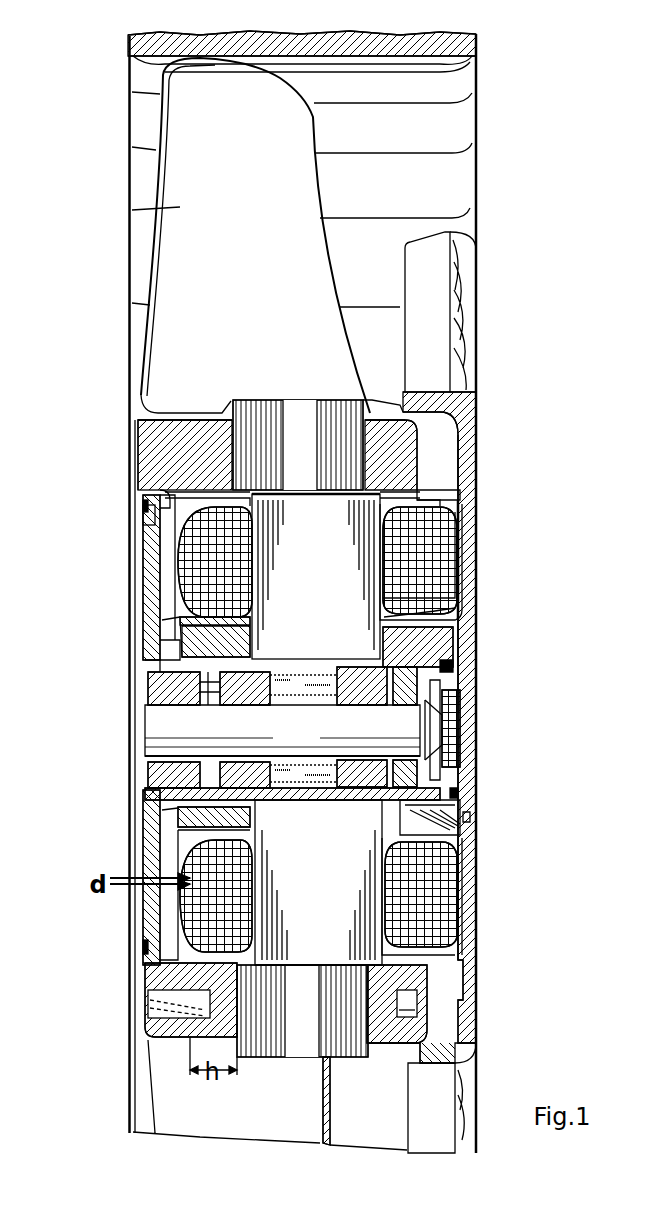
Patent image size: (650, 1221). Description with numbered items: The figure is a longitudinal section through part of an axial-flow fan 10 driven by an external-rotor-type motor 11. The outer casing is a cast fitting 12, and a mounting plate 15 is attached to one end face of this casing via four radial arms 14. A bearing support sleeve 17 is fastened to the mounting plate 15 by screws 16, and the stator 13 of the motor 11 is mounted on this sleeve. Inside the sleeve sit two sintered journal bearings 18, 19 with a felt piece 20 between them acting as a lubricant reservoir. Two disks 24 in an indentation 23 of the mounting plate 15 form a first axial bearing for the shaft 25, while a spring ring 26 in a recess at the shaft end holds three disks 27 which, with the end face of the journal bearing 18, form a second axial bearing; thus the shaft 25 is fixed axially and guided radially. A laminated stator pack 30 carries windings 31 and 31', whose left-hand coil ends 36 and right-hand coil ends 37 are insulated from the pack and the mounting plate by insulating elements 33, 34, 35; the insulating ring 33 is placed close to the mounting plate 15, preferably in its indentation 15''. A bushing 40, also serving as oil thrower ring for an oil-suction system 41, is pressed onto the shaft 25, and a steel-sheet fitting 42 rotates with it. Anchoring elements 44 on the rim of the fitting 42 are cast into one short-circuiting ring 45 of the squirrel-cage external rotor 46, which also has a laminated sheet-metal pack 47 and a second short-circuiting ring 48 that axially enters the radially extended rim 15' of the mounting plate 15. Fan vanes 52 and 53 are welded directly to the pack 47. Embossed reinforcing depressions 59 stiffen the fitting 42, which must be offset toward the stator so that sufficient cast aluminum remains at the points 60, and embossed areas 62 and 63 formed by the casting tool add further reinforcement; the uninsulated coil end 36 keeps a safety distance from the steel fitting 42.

The axial-flow fan 10 is at (490, 374).
The external-rotor-type motor 11 is at (488, 566).
The cast fitting 12 is at (478, 36).
The stator 13 is at (466, 500).
The radial arms 14 is at (466, 282).
The mounting plate 15 is at (470, 717).
The rim of the mounting plate 15' is at (421, 743).
The indentation of the mounting plate 15'' is at (516, 557).
The screws 16 is at (472, 823).
The bearing support sleeve 17 is at (442, 652).
The journal bearing 18 is at (350, 670).
The journal bearing 19 is at (288, 672).
The felt piece 20 is at (316, 640).
The indentation 23 is at (455, 718).
The disks 24 is at (455, 742).
The shaft 25 is at (283, 738).
The spring ring 26 is at (455, 778).
The disks 27 is at (420, 664).
The laminated stator pack 30 is at (298, 853).
The winding 31 is at (157, 562).
The winding 31' is at (157, 901).
The insulating element 33 is at (442, 562).
The insulating element 34 is at (437, 505).
The insulating element 35 is at (250, 488).
The coil ends 36 is at (190, 592).
The coil ends 37 is at (445, 592).
The bushing 40 is at (165, 775).
The oil-suction system 41 is at (160, 700).
The fitting 42 is at (158, 853).
The anchoring elements 44 is at (160, 1012).
The short-circuiting ring 45 is at (160, 470).
The external rotor 46 is at (117, 439).
The laminated sheet-metal pack 47 is at (297, 410).
The second short-circuiting ring 48 is at (388, 420).
The fan vane 52 is at (180, 217).
The fan vane 53 is at (165, 1090).
The reinforcing depressions 59 is at (160, 622).
The points of cast aluminum material cross section 60 is at (150, 508).
The embossed area 62 is at (148, 522).
The embossed area 63 is at (160, 492).